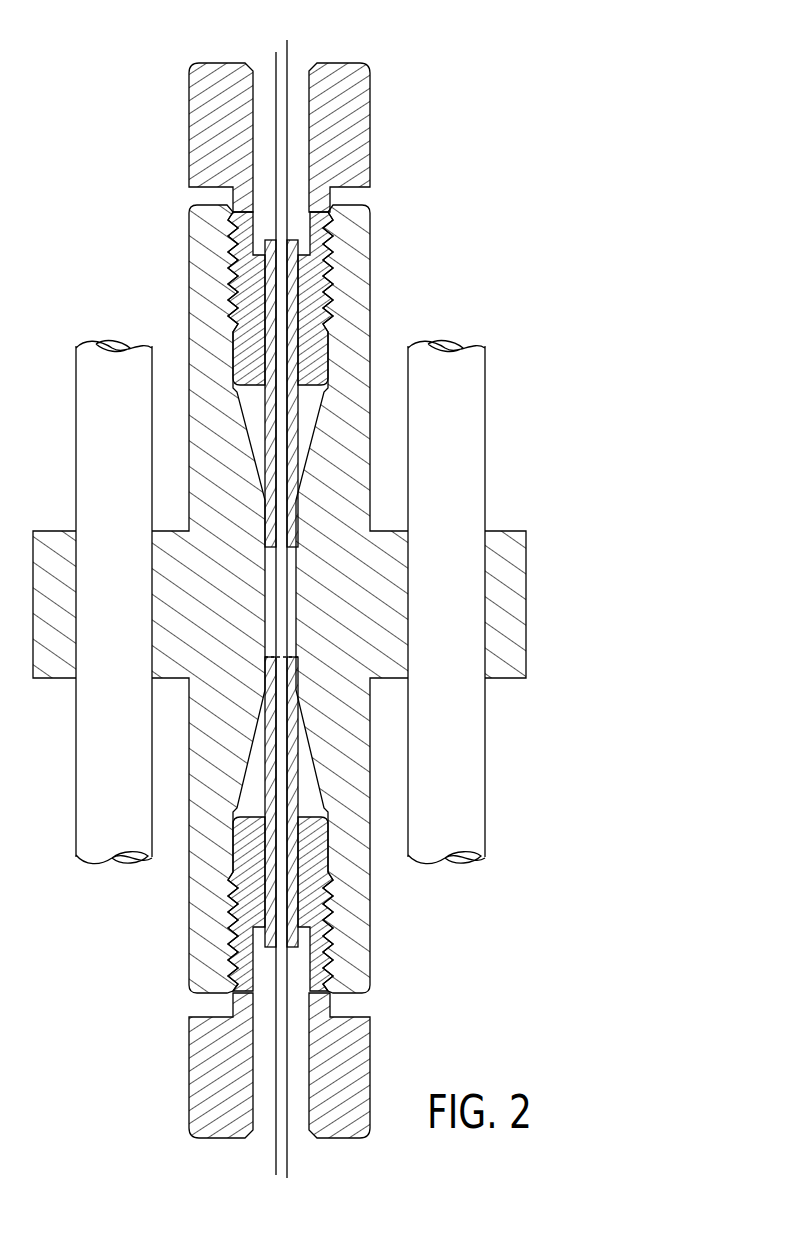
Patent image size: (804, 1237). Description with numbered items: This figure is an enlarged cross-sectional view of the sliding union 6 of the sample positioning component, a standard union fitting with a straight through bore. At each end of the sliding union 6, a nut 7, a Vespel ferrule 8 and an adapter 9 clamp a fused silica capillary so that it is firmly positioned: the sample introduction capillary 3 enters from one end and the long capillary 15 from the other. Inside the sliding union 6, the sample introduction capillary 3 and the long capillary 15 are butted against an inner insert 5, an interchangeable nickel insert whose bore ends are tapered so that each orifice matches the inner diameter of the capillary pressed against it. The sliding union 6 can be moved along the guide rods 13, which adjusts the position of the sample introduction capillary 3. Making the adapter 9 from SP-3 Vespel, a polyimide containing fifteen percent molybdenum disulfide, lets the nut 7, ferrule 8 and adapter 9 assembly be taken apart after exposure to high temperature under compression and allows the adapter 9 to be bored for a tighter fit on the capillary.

The sample introduction capillary 3 is at (280, 992).
The inner insert 5 is at (291, 582).
The sliding union 6 is at (120, 272).
The nut 7 is at (362, 100).
The Vespel ferrule 8 is at (307, 390).
The adapter 9 is at (295, 277).
The guide rods 13 is at (458, 758).
The long capillary 15 is at (285, 62).